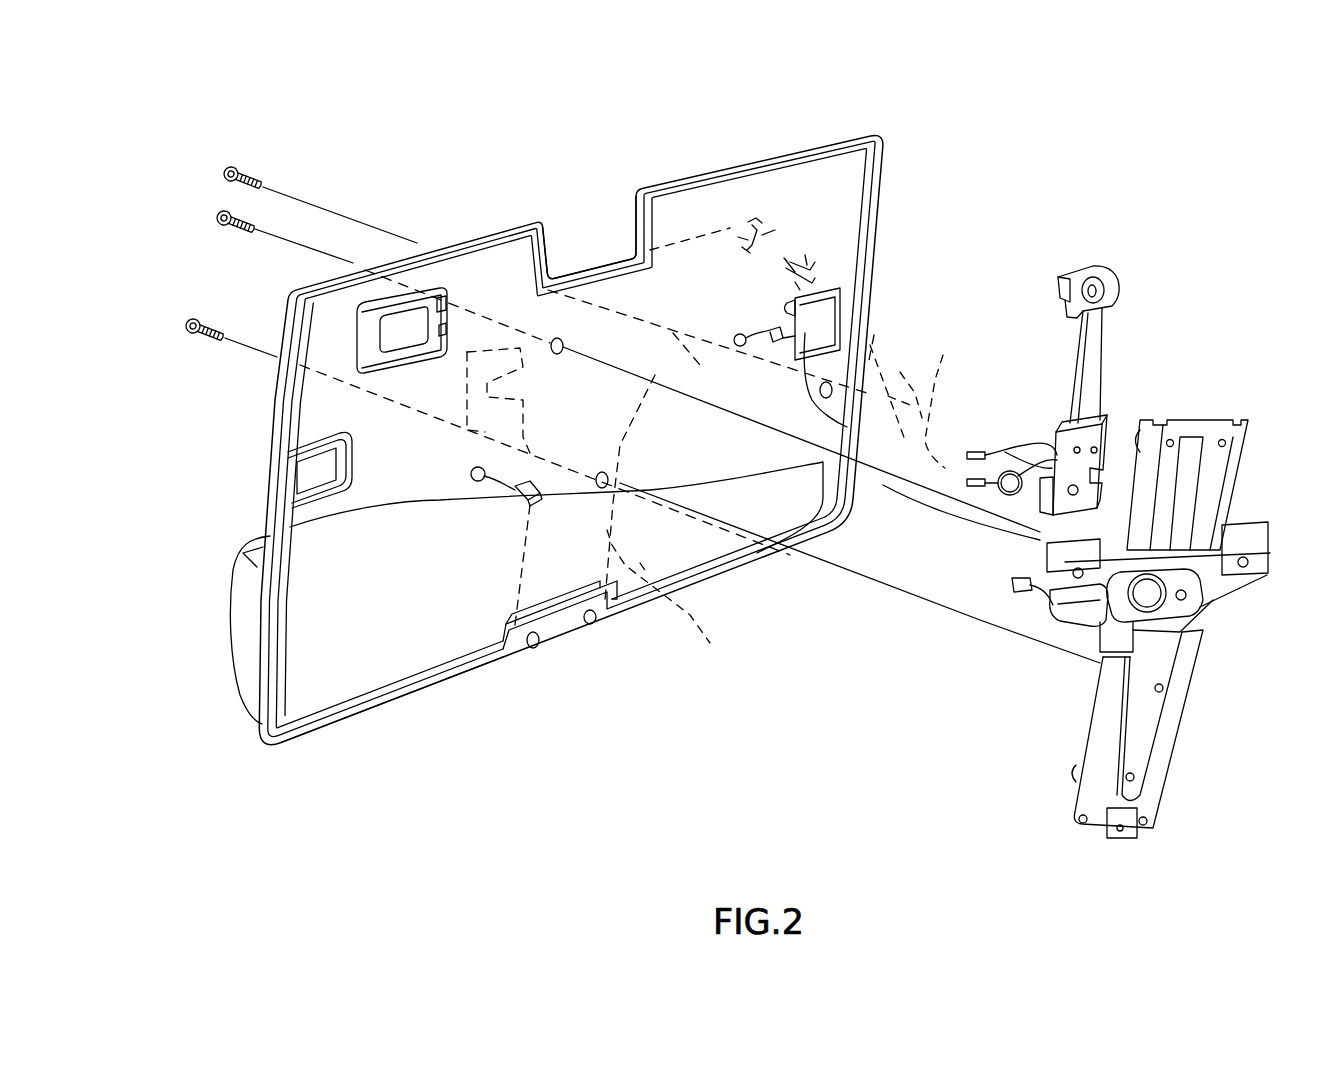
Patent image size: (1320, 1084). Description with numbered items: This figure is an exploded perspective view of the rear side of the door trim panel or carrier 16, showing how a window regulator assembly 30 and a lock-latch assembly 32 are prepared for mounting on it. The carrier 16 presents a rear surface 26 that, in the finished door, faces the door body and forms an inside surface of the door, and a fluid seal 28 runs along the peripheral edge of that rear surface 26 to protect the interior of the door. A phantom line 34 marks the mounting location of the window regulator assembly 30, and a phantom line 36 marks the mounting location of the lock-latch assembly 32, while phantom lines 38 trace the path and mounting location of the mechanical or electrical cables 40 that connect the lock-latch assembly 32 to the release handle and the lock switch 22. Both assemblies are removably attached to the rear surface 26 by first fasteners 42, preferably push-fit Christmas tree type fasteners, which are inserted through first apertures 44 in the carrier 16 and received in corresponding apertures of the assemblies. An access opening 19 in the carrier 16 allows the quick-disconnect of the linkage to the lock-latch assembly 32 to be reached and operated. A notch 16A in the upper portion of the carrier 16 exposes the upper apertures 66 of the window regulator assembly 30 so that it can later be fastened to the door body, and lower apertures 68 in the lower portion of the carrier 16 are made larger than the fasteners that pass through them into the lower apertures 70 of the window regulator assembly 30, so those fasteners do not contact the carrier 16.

The carrier 16 is at (772, 154).
The notch 16A is at (560, 217).
The access opening 19 is at (787, 308).
The lock switch 22 is at (444, 300).
The rear surface 26 is at (407, 605).
The fluid seal 28 is at (327, 725).
The window regulator assembly 30 is at (1093, 701).
The lock-latch assembly 32 is at (1103, 417).
The phantom line 34 is at (710, 643).
The phantom line 36 is at (874, 335).
The phantom lines 38 is at (945, 352).
The cables 40 is at (1006, 496).
The first fasteners 42 is at (187, 320).
The first apertures 44 is at (556, 354).
The upper apertures 66 is at (1226, 436).
The lower apertures 68 is at (537, 647).
The lower apertures 70 is at (1145, 826).